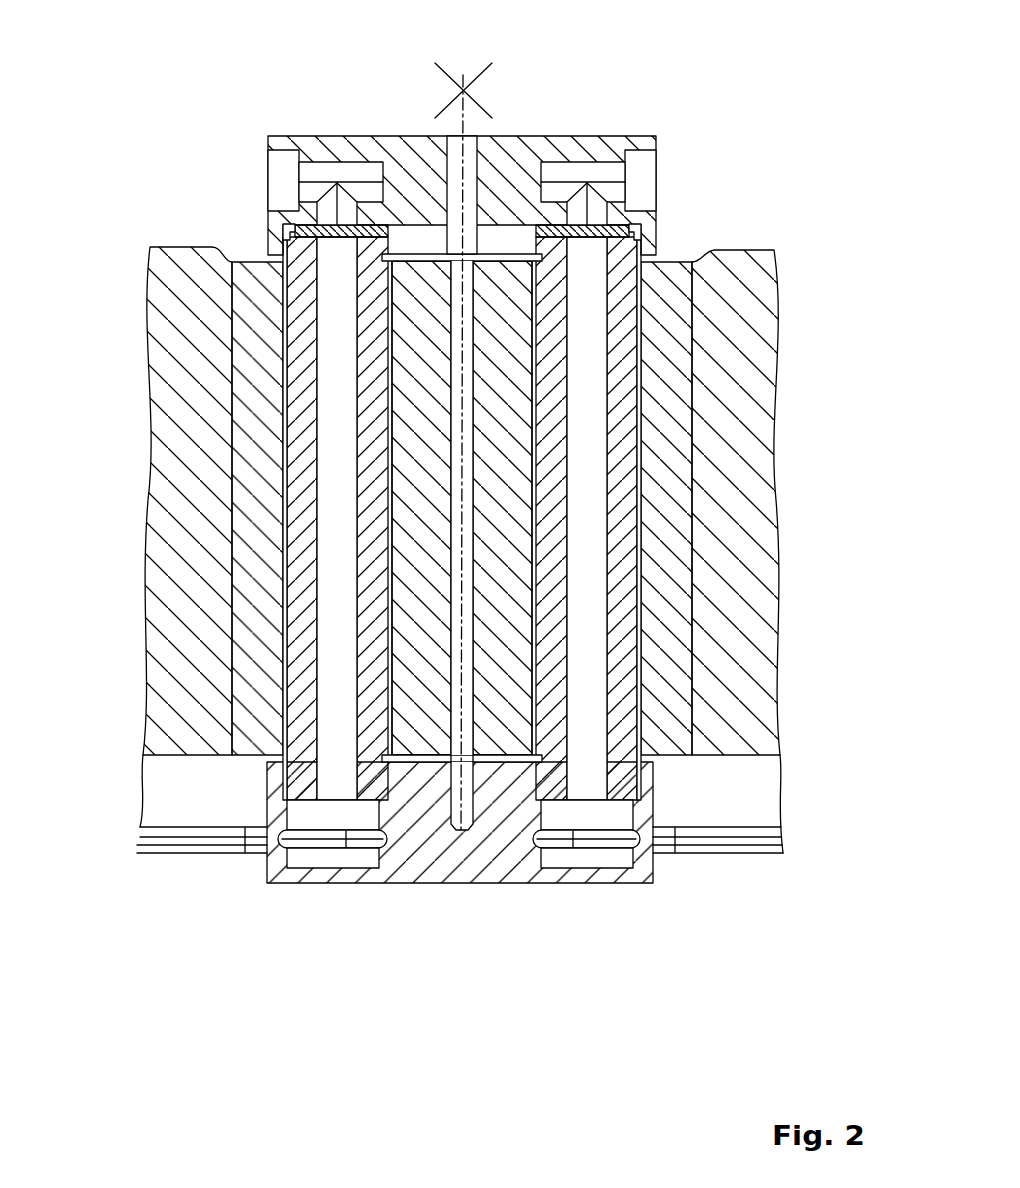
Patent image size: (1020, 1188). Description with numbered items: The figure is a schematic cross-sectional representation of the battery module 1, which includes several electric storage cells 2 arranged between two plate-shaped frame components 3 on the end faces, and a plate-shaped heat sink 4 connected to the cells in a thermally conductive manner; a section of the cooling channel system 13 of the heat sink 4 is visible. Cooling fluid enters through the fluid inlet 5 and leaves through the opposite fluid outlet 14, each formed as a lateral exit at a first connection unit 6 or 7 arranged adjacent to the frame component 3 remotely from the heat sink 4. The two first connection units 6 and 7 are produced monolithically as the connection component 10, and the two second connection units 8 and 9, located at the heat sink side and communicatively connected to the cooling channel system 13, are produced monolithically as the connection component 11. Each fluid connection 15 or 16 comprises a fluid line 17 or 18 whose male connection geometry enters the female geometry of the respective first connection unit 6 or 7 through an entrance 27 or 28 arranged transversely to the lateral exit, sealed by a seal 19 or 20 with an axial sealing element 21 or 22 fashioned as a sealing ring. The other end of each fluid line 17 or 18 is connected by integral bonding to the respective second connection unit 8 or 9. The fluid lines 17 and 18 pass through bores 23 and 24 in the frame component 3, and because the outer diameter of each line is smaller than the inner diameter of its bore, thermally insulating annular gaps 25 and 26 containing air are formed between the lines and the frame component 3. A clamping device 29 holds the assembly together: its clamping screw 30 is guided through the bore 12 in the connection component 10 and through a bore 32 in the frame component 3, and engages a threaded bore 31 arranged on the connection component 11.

The battery module 1 is at (182, 95).
The electric storage cells 2 is at (165, 790).
The plate-shaped frame component 3 is at (168, 647).
The plate-shaped heat sink 4 is at (152, 853).
The fluid inlet 5 is at (278, 165).
The first connection unit 6 is at (305, 145).
The first connection unit 7 is at (597, 150).
The second connection unit 8 is at (333, 870).
The second connection unit 9 is at (588, 870).
The connection component 10 is at (644, 128).
The connection component 11 is at (504, 890).
The bore 12 is at (447, 186).
The cooling channel system 13 is at (218, 853).
The fluid outlet 14 is at (648, 165).
The fluid connection 15 is at (275, 474).
The fluid connection 16 is at (652, 483).
The fluid line 17 is at (297, 533).
The fluid line 18 is at (621, 547).
The seal 19 is at (288, 208).
The seal 20 is at (650, 218).
The axial sealing element 21 is at (277, 240).
The axial sealing element 22 is at (645, 240).
The bore 23 is at (285, 702).
The bore 24 is at (641, 653).
The annular gap 25 is at (287, 612).
The annular gap 26 is at (638, 590).
The entrance 27 is at (343, 210).
The entrance 28 is at (580, 208).
The clamping device 29 is at (504, 368).
The clamping screw 30 is at (465, 410).
The threaded bore 31 is at (452, 808).
The bore 32 is at (470, 713).